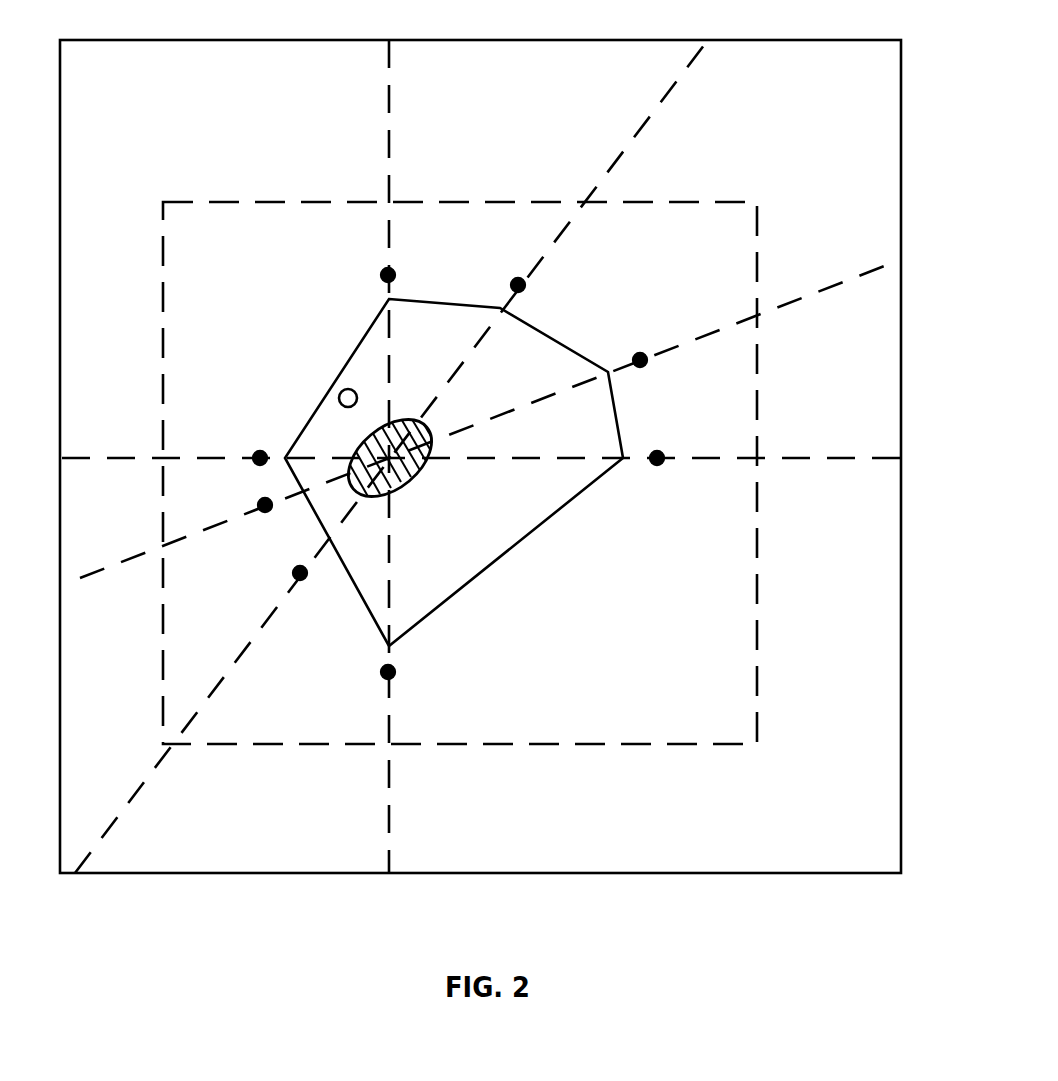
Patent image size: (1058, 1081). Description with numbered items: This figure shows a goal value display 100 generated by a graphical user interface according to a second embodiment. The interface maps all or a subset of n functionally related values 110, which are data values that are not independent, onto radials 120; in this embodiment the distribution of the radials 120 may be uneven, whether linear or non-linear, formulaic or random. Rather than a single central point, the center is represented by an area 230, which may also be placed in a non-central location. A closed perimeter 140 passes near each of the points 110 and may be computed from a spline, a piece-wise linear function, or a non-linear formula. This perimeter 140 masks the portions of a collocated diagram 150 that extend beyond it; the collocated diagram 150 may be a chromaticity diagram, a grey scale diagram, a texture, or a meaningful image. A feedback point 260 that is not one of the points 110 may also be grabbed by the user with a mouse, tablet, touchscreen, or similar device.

The image region 100 is at (643, 40).
The functionally related values 110 is at (394, 270).
The radials 120 is at (389, 112).
The perimeter 140 is at (568, 345).
The collocated diagram 150 is at (498, 202).
The area 230 is at (418, 420).
The feedback point 260 is at (342, 390).